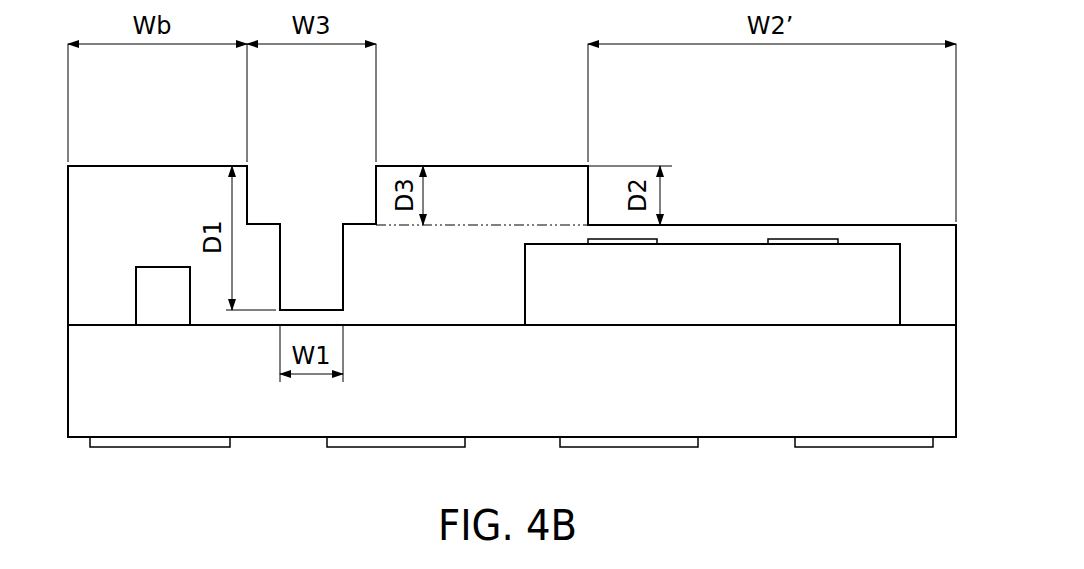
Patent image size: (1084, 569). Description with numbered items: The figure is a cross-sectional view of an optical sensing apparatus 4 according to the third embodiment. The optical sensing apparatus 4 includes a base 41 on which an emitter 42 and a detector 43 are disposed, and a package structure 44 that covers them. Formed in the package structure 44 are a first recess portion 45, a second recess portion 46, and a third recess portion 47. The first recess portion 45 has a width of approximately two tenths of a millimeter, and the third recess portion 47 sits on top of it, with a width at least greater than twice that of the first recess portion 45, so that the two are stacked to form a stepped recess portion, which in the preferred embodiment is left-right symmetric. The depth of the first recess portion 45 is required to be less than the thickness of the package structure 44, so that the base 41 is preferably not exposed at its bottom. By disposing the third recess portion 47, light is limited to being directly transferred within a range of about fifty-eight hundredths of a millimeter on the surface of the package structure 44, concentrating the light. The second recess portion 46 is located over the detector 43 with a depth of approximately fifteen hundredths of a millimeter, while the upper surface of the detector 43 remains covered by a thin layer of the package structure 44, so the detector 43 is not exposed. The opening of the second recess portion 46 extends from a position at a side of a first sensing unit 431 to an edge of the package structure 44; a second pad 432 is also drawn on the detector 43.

The optical sensing apparatus 4 is at (158, 137).
The base 41 is at (756, 412).
The emitter 42 is at (143, 292).
The detector 43 is at (536, 288).
The first sensing unit 431 is at (620, 245).
The second conductive pad 432 is at (805, 240).
The package structure 44 is at (927, 250).
The first recess portion 45 is at (311, 250).
The second recess portion 46 is at (718, 197).
The third recess portion 47 is at (268, 210).